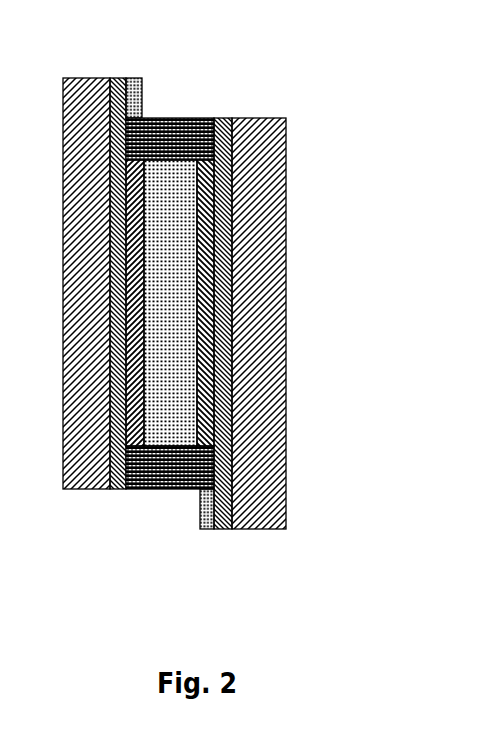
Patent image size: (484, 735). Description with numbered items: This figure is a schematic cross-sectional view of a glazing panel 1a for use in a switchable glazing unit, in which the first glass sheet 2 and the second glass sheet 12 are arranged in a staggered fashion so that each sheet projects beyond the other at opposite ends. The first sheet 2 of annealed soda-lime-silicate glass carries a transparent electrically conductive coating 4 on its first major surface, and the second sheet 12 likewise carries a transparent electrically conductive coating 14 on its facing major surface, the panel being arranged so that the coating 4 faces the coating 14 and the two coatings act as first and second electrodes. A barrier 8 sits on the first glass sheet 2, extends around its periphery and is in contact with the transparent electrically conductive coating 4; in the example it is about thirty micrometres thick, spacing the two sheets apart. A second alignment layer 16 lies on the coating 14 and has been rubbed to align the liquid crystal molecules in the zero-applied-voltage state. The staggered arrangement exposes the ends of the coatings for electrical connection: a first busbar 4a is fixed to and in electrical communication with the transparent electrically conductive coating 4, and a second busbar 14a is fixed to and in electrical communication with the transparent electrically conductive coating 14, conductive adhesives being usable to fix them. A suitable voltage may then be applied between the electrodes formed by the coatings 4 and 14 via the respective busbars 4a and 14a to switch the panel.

The glazing panel 1a is at (247, 307).
The first sheet 2 is at (88, 84).
The transparent electrically conductive coating 4 is at (118, 473).
The first busbar 4a is at (135, 99).
The barrier 8 is at (193, 117).
The second sheet 12 is at (268, 205).
The transparent electrically conductive coating 14 is at (223, 514).
The second busbar 14a is at (202, 508).
The second alignment layer 16 is at (205, 360).